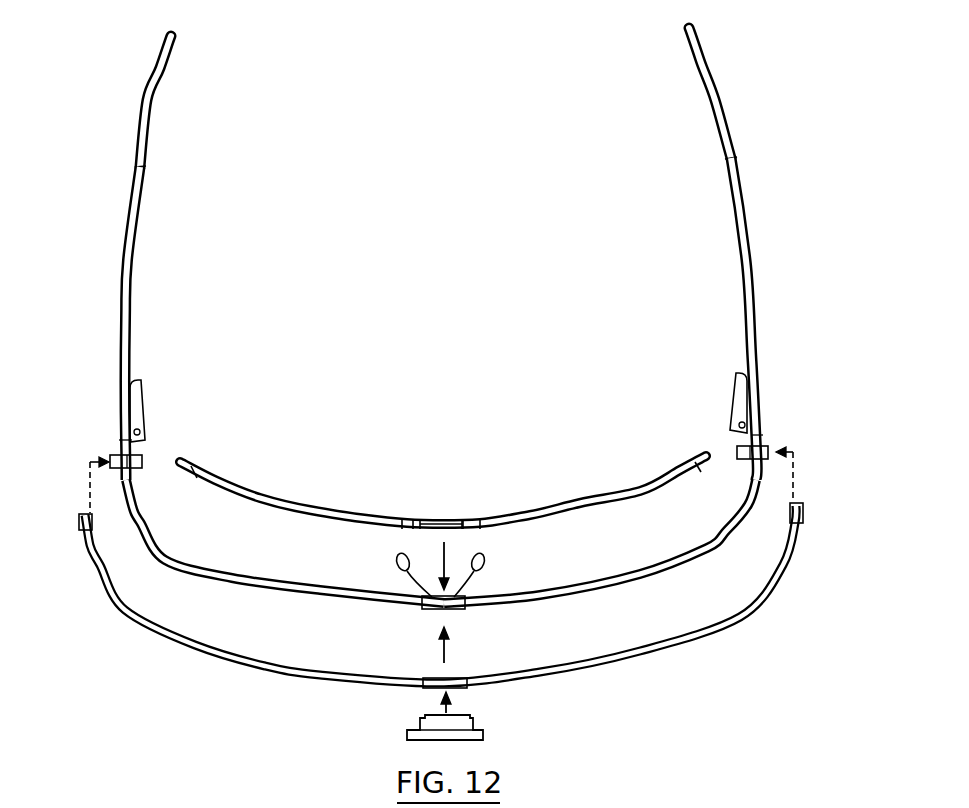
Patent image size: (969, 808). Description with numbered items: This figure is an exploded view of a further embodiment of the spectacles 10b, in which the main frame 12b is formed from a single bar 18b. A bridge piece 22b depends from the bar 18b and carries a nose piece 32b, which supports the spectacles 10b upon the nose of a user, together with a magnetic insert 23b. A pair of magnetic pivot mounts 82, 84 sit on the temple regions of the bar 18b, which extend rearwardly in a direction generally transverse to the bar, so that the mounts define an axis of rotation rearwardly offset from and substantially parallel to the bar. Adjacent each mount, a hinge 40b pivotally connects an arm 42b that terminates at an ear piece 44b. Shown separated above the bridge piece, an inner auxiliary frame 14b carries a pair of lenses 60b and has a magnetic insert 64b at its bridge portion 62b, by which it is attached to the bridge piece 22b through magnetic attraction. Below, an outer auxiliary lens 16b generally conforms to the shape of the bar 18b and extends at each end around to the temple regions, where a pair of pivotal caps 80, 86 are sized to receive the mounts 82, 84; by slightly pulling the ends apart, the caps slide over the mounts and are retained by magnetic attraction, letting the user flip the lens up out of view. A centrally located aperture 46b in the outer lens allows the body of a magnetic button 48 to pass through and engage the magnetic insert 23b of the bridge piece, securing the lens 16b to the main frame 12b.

The spectacles 10b is at (150, 696).
The main frame 12b is at (315, 620).
The inner auxiliary frame 14b is at (640, 490).
The outer auxiliary lens 16b is at (118, 600).
The bar 18b is at (600, 595).
The bridge piece 22b is at (470, 605).
The magnetic insert 23b is at (425, 605).
The nose piece 32b is at (483, 572).
The hinge 40b is at (118, 433).
The arm 42b is at (118, 322).
The ear piece 44b is at (142, 103).
The aperture 46b is at (460, 680).
The magnetic button 48 is at (483, 730).
The lenses 60b is at (258, 495).
The bridge portion 62b is at (410, 518).
The magnetic insert 64b is at (420, 528).
The pivotal cap 80 is at (78, 520).
The magnetic pivot mount 82 is at (145, 455).
The magnetic pivot mount 84 is at (743, 458).
The pivotal cap 86 is at (803, 510).